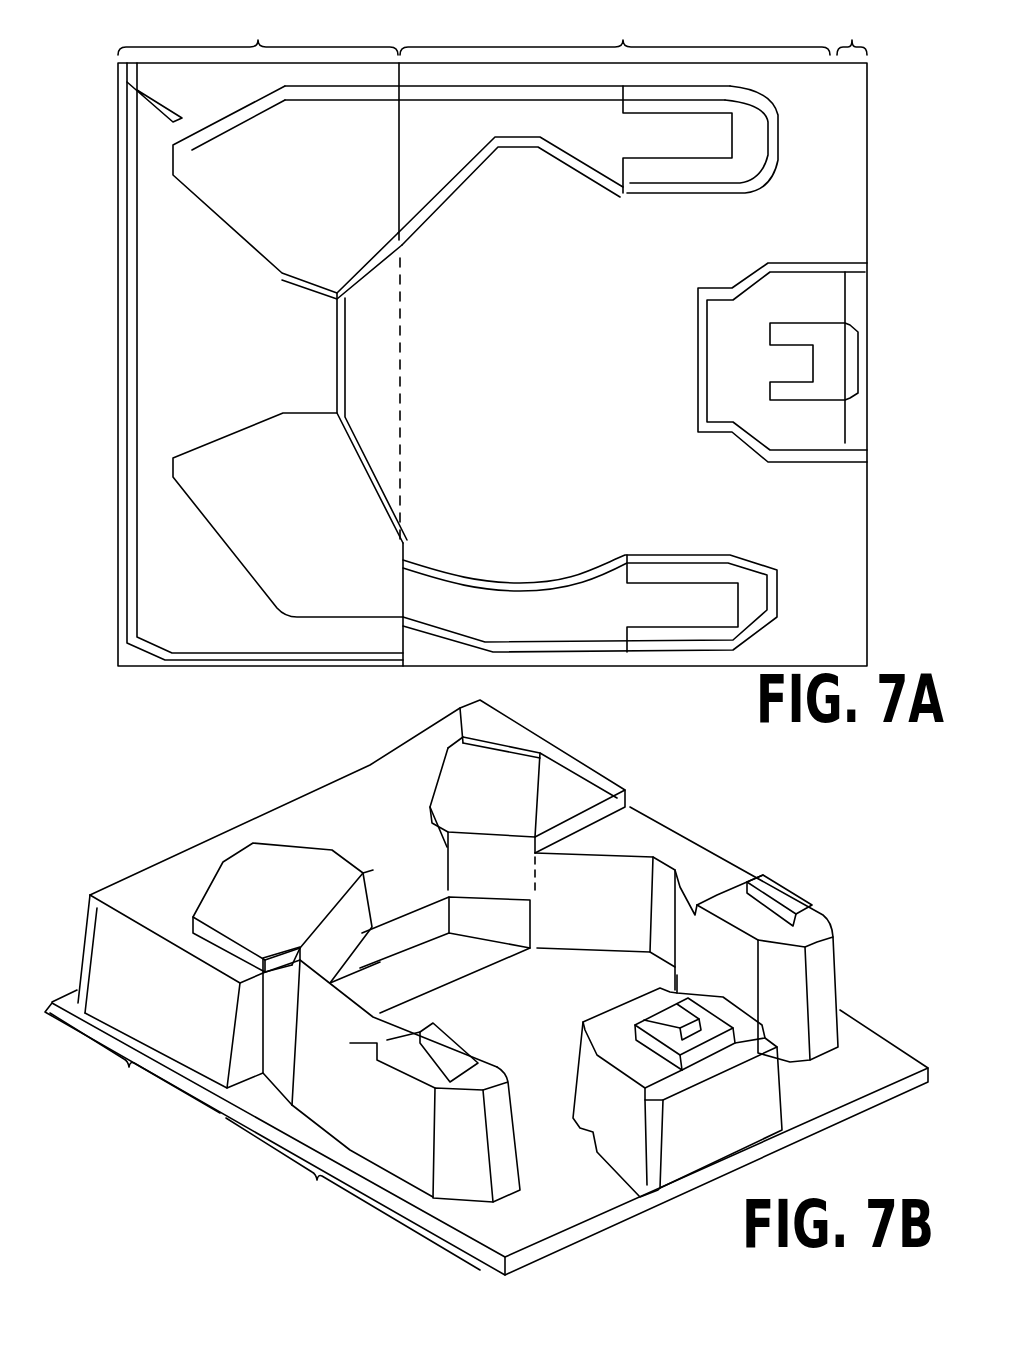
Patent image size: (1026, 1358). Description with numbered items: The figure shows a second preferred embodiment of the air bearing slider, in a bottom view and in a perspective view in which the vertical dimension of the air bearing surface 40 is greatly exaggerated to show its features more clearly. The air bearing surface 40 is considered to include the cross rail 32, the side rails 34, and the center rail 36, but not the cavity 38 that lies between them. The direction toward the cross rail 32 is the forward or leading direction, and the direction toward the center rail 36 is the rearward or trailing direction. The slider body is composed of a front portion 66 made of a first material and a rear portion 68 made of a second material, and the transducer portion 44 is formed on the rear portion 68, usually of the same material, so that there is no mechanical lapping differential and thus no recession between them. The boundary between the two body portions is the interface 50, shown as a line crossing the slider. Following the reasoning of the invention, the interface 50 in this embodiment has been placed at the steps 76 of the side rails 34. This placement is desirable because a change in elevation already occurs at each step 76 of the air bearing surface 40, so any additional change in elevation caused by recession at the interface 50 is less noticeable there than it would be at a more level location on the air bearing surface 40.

In FIG. 7A, the cross rail 32 is at (155, 370).
In FIG. 7B, the cross rail 32 is at (323, 798).
In FIG. 7A, the side rails 34 is at (513, 118).
In FIG. 7B, the side rails 34 is at (657, 838).
In FIG. 7A, the center rail 36 is at (790, 363).
In FIG. 7B, the center rail 36 is at (642, 1058).
In FIG. 7A, the cavity 38 is at (580, 367).
In FIG. 7B, the cavity 38 is at (562, 990).
In FIG. 7A, the air bearing surface 40 is at (177, 542).
In FIG. 7B, the air bearing surface 40 is at (165, 892).
In FIG. 7A, the transducer portion 44 is at (855, 31).
In FIG. 7B, the transducer portion 44 is at (500, 1284).
In FIG. 7A, the interface 50 is at (402, 305).
In FIG. 7B, the interface 50 is at (450, 935).
In FIG. 7A, the front portion 66 is at (258, 34).
In FIG. 7B, the front portion 66 is at (135, 1063).
In FIG. 7A, the rear portion 68 is at (615, 32).
In FIG. 7B, the rear portion 68 is at (353, 1194).
In FIG. 7A, the step 76 is at (398, 197).
In FIG. 7B, the step 76 is at (567, 827).